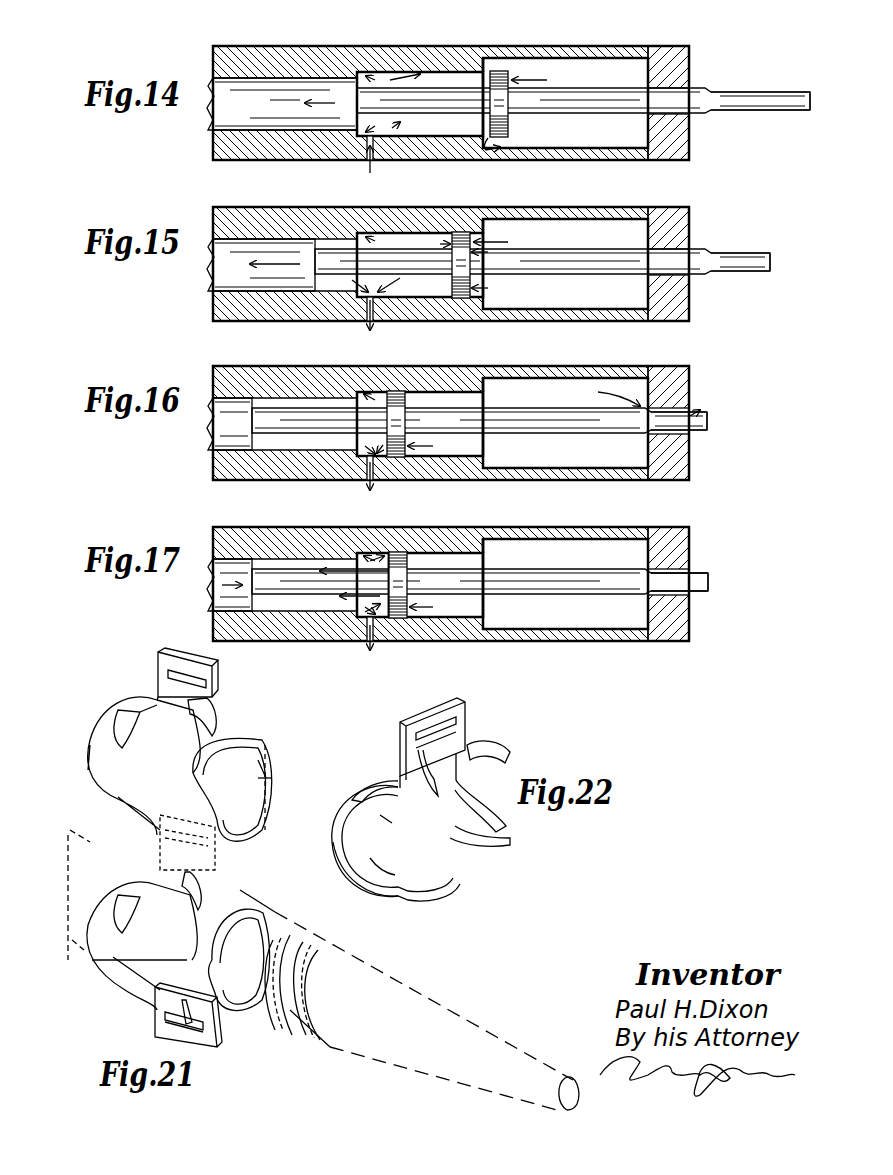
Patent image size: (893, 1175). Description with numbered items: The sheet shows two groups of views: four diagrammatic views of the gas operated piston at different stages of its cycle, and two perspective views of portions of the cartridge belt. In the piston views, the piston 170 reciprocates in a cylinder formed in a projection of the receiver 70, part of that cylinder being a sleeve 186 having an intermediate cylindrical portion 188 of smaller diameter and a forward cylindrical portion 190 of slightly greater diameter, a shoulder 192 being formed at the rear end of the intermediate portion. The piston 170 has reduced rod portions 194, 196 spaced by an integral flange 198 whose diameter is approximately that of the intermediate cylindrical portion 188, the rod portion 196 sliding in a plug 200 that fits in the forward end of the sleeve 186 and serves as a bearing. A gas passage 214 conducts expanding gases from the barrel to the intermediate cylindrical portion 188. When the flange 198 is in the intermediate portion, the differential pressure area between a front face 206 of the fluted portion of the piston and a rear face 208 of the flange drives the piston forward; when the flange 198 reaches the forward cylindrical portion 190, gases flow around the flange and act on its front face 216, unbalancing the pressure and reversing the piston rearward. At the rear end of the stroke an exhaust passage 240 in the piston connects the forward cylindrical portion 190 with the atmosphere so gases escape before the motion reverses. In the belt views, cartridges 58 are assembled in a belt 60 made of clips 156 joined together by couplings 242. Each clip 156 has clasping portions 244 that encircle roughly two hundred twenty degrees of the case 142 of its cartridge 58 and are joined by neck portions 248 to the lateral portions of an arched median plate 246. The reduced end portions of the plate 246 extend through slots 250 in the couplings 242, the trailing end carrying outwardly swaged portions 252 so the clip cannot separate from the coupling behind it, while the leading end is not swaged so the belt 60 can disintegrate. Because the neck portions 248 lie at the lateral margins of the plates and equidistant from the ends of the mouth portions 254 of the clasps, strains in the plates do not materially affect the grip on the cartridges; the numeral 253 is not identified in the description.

In FIG. 14, the receiver 70 is at (690, 49).
In FIG. 15, the receiver 70 is at (690, 210).
In FIG. 16, the receiver 70 is at (690, 368).
In FIG. 17, the receiver 70 is at (690, 566).
In FIG. 14, the sleeve 186 is at (235, 62).
In FIG. 15, the sleeve 186 is at (238, 222).
In FIG. 16, the sleeve 186 is at (292, 376).
In FIG. 17, the sleeve 186 is at (238, 540).
In FIG. 14, the intermediate cylindrical portion 188 is at (476, 72).
In FIG. 15, the intermediate cylindrical portion 188 is at (462, 238).
In FIG. 16, the intermediate cylindrical portion 188 is at (465, 394).
In FIG. 17, the intermediate cylindrical portion 188 is at (454, 556).
In FIG. 14, the forward cylindrical portion 190 is at (606, 66).
In FIG. 15, the forward cylindrical portion 190 is at (604, 226).
In FIG. 16, the forward cylindrical portion 190 is at (568, 386).
In FIG. 17, the forward cylindrical portion 190 is at (572, 548).
In FIG. 14, the shoulder 192 is at (362, 74).
In FIG. 15, the shoulder 192 is at (380, 232).
In FIG. 16, the shoulder 192 is at (362, 390).
In FIG. 17, the shoulder 192 is at (370, 552).
In FIG. 14, the rod portion 194 is at (423, 132).
In FIG. 15, the rod portion 194 is at (424, 272).
In FIG. 16, the rod portion 194 is at (300, 436).
In FIG. 17, the rod portion 194 is at (270, 605).
In FIG. 14, the rod portion 196 is at (572, 110).
In FIG. 15, the rod portion 196 is at (554, 270).
In FIG. 16, the rod portion 196 is at (594, 432).
In FIG. 17, the rod portion 196 is at (591, 594).
In FIG. 14, the flange 198 is at (497, 70).
In FIG. 15, the flange 198 is at (472, 232).
In FIG. 16, the flange 198 is at (398, 392).
In FIG. 17, the flange 198 is at (398, 553).
In FIG. 14, the plug 200 is at (690, 76).
In FIG. 15, the plug 200 is at (690, 298).
In FIG. 16, the plug 200 is at (668, 423).
In FIG. 17, the plug 200 is at (690, 616).
In FIG. 14, the front face 206 is at (366, 76).
In FIG. 15, the front face 206 is at (306, 240).
In FIG. 16, the front face 206 is at (258, 398).
In FIG. 17, the front face 206 is at (262, 558).
In FIG. 14, the rear face 208 is at (492, 140).
In FIG. 15, the rear face 208 is at (449, 261).
In FIG. 16, the rear face 208 is at (384, 394).
In FIG. 17, the rear face 208 is at (372, 618).
In FIG. 14, the gas passage 214 is at (366, 161).
In FIG. 15, the gas passage 214 is at (375, 322).
In FIG. 16, the gas passage 214 is at (368, 480).
In FIG. 17, the gas passage 214 is at (375, 642).
In FIG. 14, the front face 216 is at (544, 80).
In FIG. 15, the front face 216 is at (507, 240).
In FIG. 16, the front face 216 is at (435, 455).
In FIG. 17, the front face 216 is at (436, 615).
In FIG. 14, the exhaust passage 240 is at (768, 94).
In FIG. 15, the exhaust passage 240 is at (738, 255).
In FIG. 16, the exhaust passage 240 is at (693, 408).
In FIG. 14, the piston 170 is at (786, 112).
In FIG. 15, the piston 170 is at (771, 272).
In FIG. 16, the piston 170 is at (708, 426).
In FIG. 17, the piston 170 is at (710, 586).
In FIG. 22, the belt 60 is at (380, 758).
In FIG. 21, the belt 60 is at (118, 684).
In FIG. 22, the coupling 242 is at (466, 712).
In FIG. 21, the coupling 242 is at (177, 650).
In FIG. 22, the clasping portion 244 is at (508, 756).
In FIG. 21, the clasping portion 244 is at (266, 742).
In FIG. 22, the arched median plate 246 is at (380, 782).
In FIG. 21, the arched median plate 246 is at (162, 690).
In FIG. 22, the neck portion 248 is at (424, 867).
In FIG. 21, the neck portion 248 is at (164, 773).
In FIG. 22, the slot 250 is at (416, 746).
In FIG. 21, the slot 250 is at (168, 672).
In FIG. 22, the outwardly swaged portion 252 is at (432, 790).
In FIG. 21, the outwardly swaged portion 252 is at (214, 732).
In FIG. 21, the line 253 is at (275, 787).
In FIG. 22, the mouth portion 254 is at (500, 806).
In FIG. 21, the mouth portion 254 is at (258, 775).
In FIG. 22, the clip 156 is at (338, 843).
In FIG. 21, the clip 156 is at (95, 830).
In FIG. 21, the case 142 is at (72, 952).
In FIG. 21, the cartridge 58 is at (318, 1032).